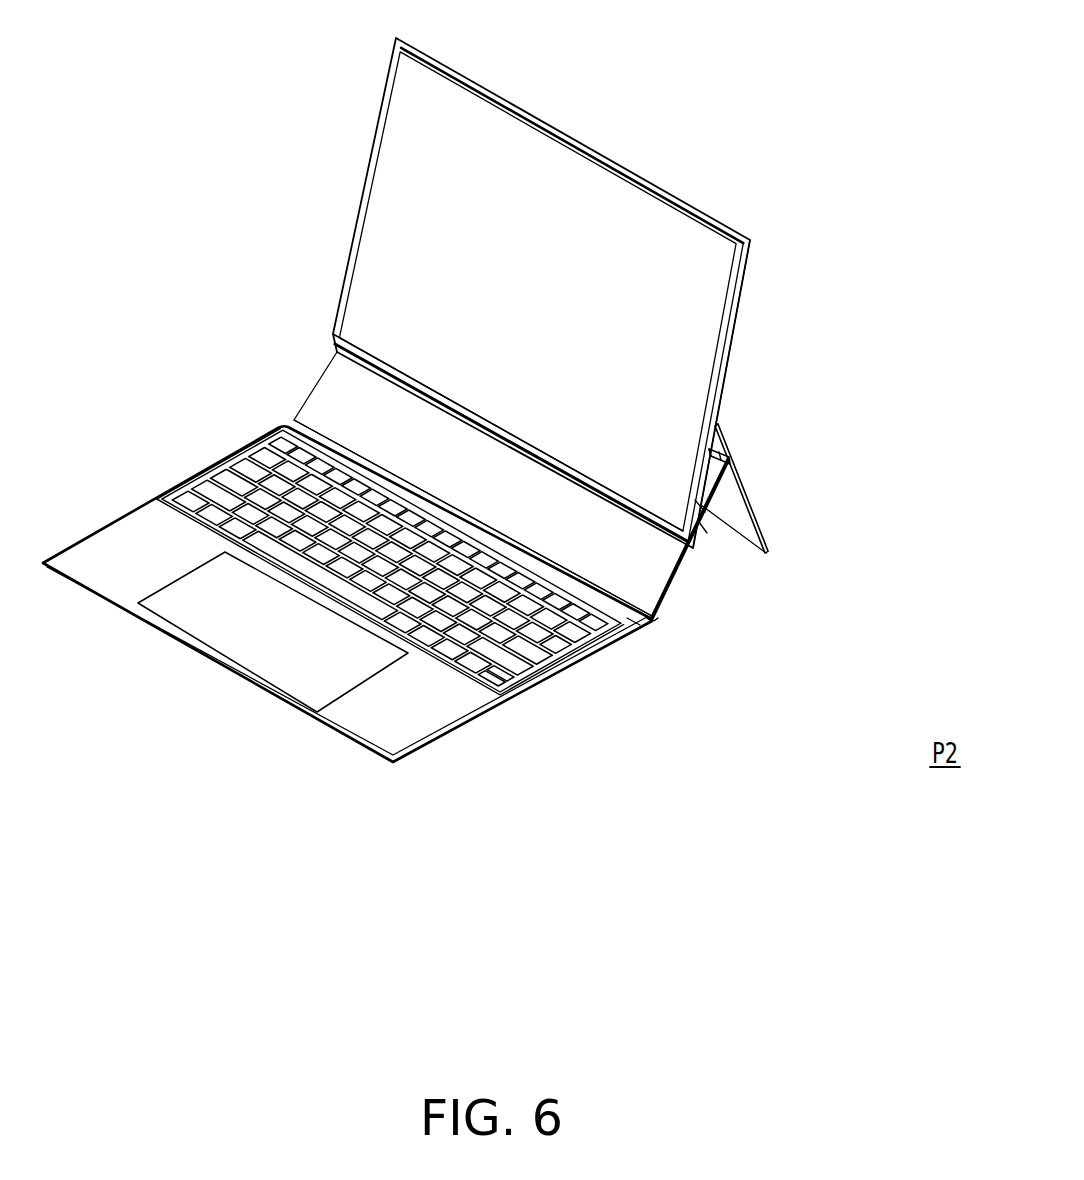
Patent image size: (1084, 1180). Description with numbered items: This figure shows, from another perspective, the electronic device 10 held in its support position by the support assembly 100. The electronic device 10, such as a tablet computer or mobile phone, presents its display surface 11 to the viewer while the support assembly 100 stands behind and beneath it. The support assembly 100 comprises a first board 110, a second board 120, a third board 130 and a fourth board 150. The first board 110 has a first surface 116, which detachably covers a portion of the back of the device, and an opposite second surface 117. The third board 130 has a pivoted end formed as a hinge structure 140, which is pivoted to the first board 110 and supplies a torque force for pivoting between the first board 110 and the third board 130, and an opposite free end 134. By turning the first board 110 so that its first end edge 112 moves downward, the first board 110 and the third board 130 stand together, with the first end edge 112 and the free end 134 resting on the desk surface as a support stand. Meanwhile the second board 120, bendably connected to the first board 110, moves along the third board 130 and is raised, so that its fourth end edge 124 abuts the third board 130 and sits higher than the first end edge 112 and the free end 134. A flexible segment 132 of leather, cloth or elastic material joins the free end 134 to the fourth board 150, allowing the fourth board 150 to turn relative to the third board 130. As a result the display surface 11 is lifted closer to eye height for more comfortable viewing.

The support assembly 100 is at (889, 131).
The electronic device 10 is at (748, 262).
The display surface 11 is at (698, 306).
The first board 110 is at (828, 498).
The first surface 116 is at (753, 483).
The second surface 117 is at (744, 524).
The first end edge 112 is at (769, 553).
The second board 120 is at (699, 507).
The fourth end edge 124 is at (703, 527).
The third board 130 is at (677, 580).
The flexible segment 132 is at (637, 623).
The free end 134 is at (653, 618).
The hinge structure 140 is at (733, 443).
The fourth board 150 is at (440, 725).